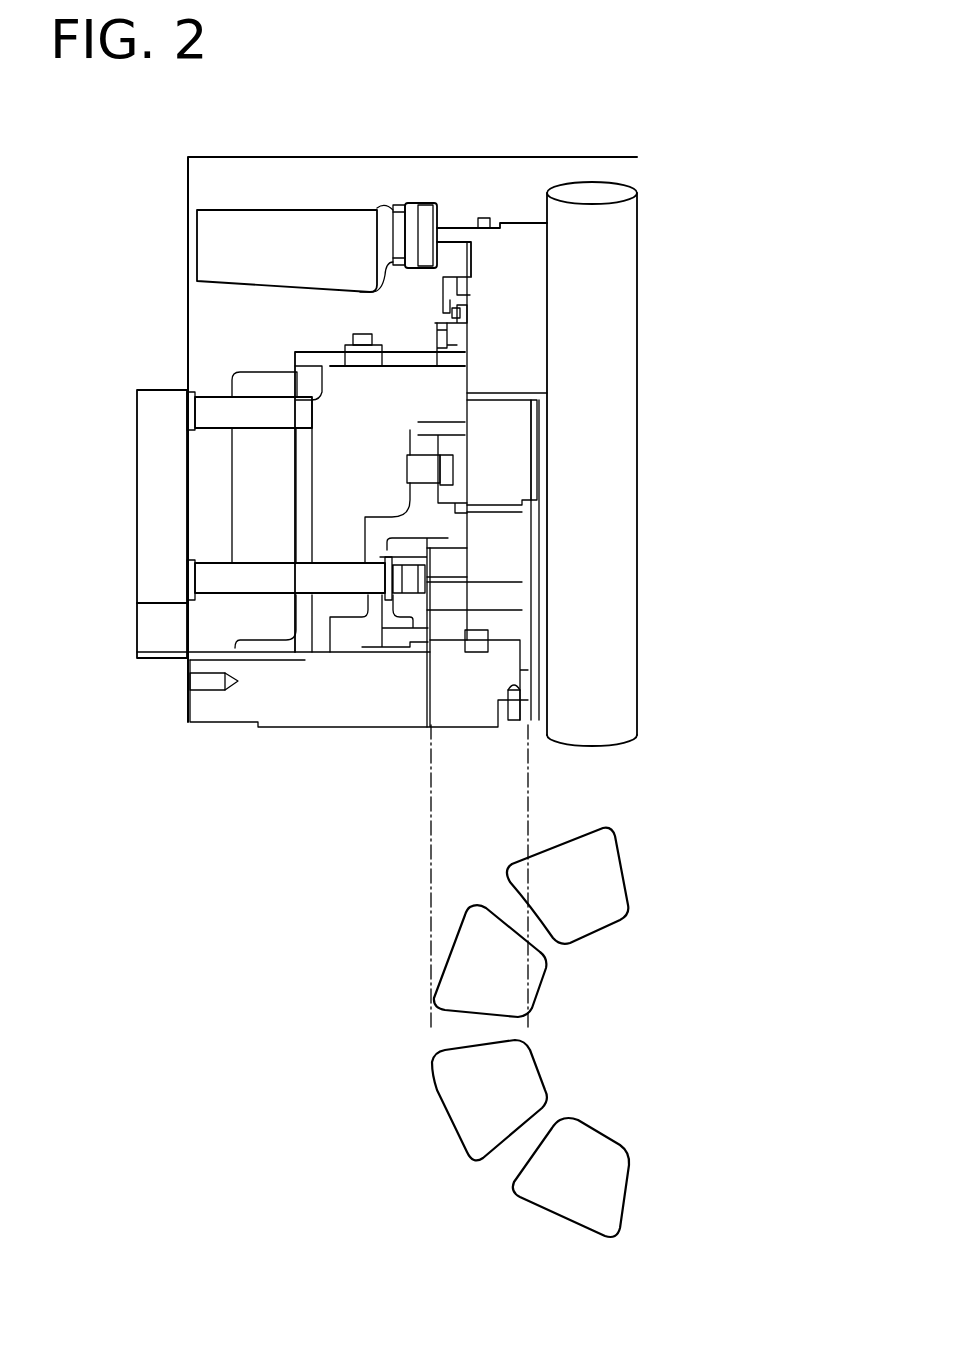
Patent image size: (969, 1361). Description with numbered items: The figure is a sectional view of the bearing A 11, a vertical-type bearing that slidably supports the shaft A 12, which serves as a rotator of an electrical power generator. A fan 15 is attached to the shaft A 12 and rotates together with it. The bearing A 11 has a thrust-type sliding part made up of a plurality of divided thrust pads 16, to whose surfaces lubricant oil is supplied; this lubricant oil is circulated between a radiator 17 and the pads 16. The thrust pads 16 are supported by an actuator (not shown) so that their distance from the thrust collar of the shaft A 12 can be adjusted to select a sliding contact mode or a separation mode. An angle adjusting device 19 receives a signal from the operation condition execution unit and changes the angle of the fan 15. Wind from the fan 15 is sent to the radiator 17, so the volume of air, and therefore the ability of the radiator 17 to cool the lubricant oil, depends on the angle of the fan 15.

The bearing A 11 is at (277, 792).
The shaft A 12 is at (607, 232).
The fan 15 is at (270, 225).
The thrust pads 16 is at (443, 1110).
The radiator 17 is at (137, 445).
The angle adjusting device 19 is at (425, 202).